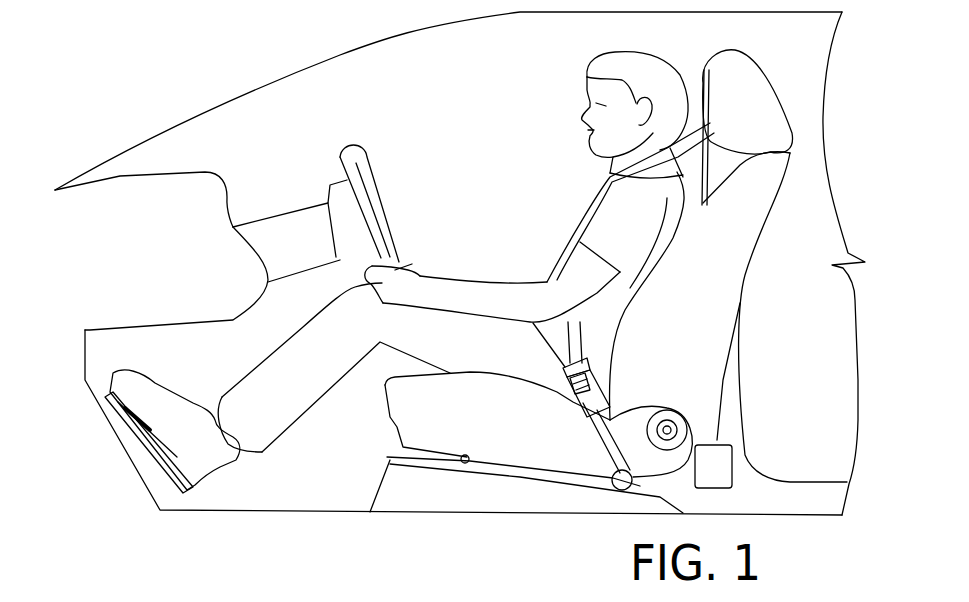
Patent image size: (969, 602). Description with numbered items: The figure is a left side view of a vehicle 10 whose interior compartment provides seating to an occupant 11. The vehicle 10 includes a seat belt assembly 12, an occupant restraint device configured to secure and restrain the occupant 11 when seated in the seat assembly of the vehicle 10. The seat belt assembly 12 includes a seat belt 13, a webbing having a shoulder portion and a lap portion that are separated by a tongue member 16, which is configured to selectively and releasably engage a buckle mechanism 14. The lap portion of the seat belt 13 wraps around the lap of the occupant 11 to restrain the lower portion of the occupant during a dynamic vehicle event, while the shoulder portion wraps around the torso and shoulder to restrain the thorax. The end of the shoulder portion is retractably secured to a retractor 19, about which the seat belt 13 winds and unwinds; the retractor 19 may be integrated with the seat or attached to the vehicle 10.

The vehicle 10 is at (148, 62).
The occupant 11 is at (515, 295).
The seat belt assembly 12 is at (399, 271).
The seat belt 13 is at (717, 440).
The buckle mechanism 14 is at (575, 403).
The tongue member 16 is at (563, 370).
The retractor 19 is at (717, 477).